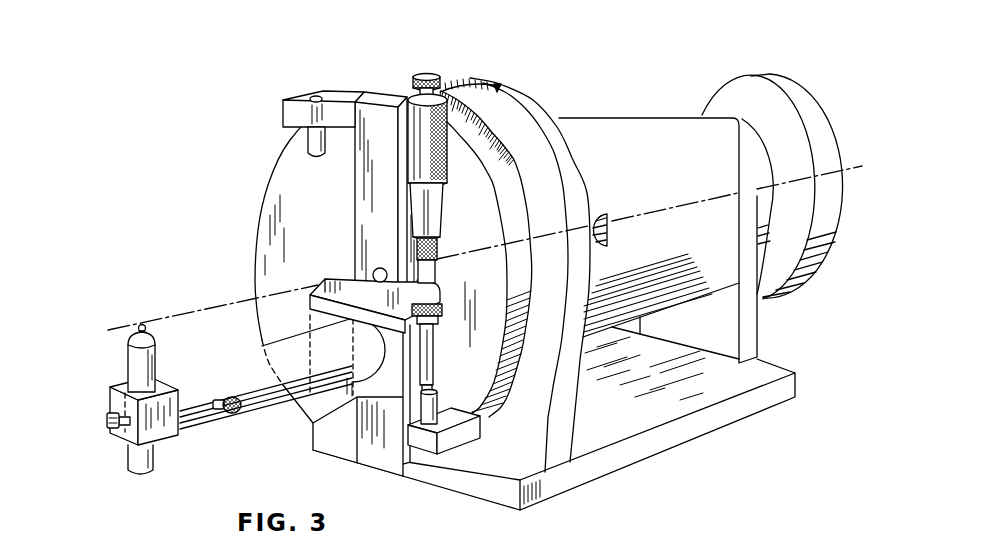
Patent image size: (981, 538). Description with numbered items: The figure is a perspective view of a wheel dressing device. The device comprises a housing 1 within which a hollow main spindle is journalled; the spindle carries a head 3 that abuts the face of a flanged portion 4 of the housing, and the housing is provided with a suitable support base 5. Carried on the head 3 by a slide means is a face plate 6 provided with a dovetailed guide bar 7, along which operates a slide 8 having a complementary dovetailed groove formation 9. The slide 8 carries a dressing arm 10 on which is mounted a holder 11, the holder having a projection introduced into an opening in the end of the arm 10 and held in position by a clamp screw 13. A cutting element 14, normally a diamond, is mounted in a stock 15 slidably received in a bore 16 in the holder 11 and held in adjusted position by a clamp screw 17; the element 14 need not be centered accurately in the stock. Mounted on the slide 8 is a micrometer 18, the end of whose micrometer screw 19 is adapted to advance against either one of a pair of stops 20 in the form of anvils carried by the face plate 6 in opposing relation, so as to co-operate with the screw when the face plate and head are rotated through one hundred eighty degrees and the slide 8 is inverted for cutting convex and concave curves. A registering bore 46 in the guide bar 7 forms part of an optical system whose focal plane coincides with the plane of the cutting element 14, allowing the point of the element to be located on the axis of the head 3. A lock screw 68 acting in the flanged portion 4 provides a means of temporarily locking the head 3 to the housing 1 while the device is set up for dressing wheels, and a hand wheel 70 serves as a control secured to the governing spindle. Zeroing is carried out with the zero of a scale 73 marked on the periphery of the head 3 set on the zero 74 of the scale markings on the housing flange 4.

The housing 1 is at (631, 125).
The head 3 is at (538, 165).
The flanged portion 4 is at (526, 89).
The support base 5 is at (710, 421).
The face plate 6 is at (288, 184).
The dovetailed guide bar 7 is at (380, 100).
The slide 8 is at (346, 283).
The dovetailed groove formation 9 is at (362, 278).
The dressing arm 10 is at (262, 394).
The holder 11 is at (176, 437).
The clamp screw 13 is at (234, 416).
The cutting element 14 is at (146, 330).
The stock 15 is at (140, 462).
The bore 16 is at (128, 386).
The clamp screw 17 is at (107, 421).
The micrometer 18 is at (436, 223).
The micrometer screw 19 is at (432, 372).
The stops 20 is at (306, 134).
The registering bore 46 is at (379, 268).
The lock screw 68 is at (608, 222).
The hand wheel 70 is at (806, 95).
The scale 73 is at (458, 85).
The zero 74 is at (497, 84).